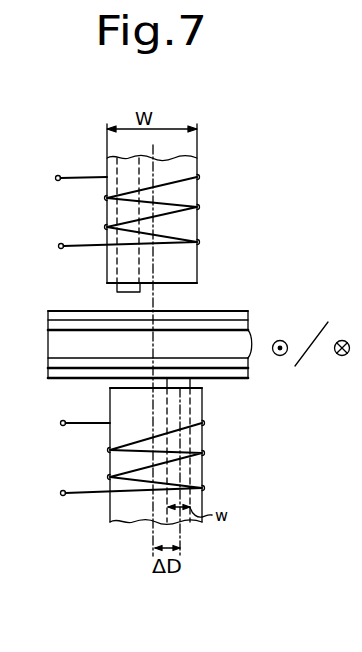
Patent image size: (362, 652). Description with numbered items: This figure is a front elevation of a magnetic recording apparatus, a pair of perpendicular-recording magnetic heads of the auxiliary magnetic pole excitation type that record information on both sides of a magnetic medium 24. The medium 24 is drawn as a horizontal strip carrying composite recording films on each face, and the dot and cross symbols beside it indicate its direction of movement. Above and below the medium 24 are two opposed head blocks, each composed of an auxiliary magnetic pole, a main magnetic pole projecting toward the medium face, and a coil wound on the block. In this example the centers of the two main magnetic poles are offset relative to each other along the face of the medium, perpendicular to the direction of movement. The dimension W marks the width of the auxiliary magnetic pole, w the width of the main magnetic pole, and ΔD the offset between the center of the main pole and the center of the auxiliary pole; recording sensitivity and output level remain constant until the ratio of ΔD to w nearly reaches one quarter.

The magnetic medium 24 is at (60, 345).